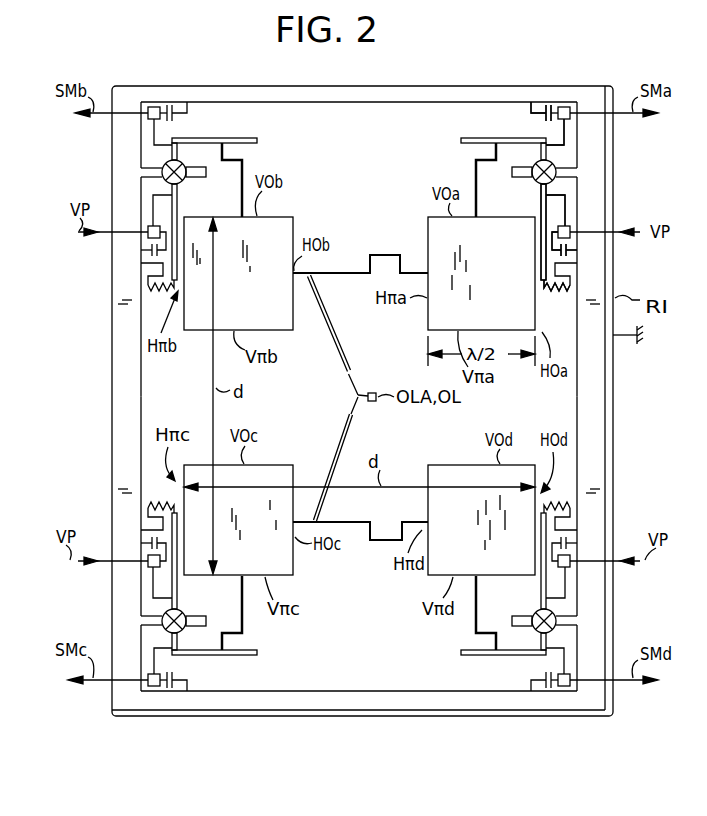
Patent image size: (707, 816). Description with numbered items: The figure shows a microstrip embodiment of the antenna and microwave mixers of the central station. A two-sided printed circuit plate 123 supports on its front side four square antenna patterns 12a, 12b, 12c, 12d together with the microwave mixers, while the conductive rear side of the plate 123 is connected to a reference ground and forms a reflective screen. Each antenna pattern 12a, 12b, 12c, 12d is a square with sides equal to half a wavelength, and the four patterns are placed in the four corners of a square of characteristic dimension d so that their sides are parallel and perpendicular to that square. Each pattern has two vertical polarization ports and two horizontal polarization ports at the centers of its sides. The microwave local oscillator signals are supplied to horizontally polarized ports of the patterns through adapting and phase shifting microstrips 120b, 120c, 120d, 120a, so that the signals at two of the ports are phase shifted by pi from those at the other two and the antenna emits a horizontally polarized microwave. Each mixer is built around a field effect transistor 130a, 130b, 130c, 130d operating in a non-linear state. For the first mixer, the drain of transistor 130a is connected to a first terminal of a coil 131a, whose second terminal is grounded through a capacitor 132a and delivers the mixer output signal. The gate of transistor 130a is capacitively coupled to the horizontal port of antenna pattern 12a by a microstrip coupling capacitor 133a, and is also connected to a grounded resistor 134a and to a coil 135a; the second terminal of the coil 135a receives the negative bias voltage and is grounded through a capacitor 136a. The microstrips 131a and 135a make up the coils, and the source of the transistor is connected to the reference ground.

The two-sided printed circuit plate 123 is at (362, 381).
The antenna pattern 12a is at (427, 216).
The antenna pattern 12b is at (293, 216).
The antenna pattern 12c is at (293, 464).
The antenna pattern 12d is at (443, 464).
The adapting and phase shifting microstrip 120a is at (356, 422).
The adapting and phase shifting microstrip 120b is at (382, 254).
The adapting and phase shifting microstrip 120c is at (348, 353).
The adapting and phase shifting microstrip 120d is at (382, 542).
The field effect transistor 130a is at (533, 167).
The field effect transistor 130b is at (184, 181).
The field effect transistor 130c is at (184, 612).
The field effect transistor 130d is at (535, 612).
The coil 131a is at (562, 131).
The capacitor 132a is at (528, 104).
The coupling capacitor 133a is at (545, 210).
The resistor 134a is at (553, 291).
The coil 135a is at (553, 193).
The capacitor 136a is at (578, 257).